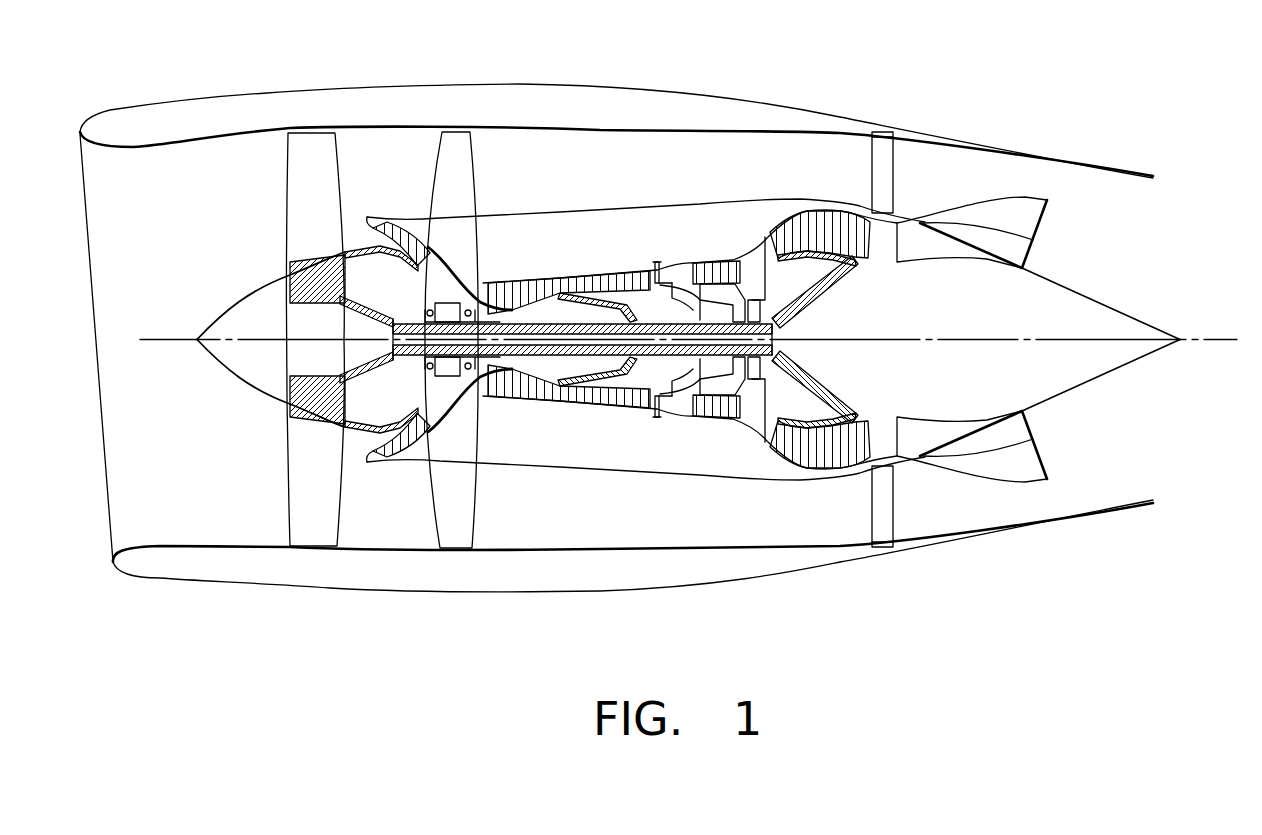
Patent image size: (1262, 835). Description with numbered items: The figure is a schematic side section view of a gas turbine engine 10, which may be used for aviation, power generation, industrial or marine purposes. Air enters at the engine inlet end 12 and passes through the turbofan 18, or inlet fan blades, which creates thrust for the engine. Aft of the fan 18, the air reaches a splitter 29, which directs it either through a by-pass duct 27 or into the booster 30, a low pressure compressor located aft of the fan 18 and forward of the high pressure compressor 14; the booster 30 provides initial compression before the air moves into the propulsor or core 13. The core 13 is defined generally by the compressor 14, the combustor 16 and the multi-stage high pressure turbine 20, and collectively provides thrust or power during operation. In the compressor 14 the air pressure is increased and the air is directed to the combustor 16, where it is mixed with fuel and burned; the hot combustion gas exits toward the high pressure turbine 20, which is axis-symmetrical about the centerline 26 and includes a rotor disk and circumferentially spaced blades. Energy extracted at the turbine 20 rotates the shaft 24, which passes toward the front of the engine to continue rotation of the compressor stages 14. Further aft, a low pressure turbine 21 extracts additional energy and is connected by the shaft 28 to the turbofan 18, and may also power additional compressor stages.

The gas turbine engine 10 is at (912, 68).
The engine inlet end 12 is at (100, 180).
The propulsor or core 13 is at (638, 176).
The compressor 14 is at (520, 272).
The combustor 16 is at (677, 260).
The turbofan 18 is at (262, 212).
The high pressure turbine 20 is at (727, 253).
The low pressure turbine 21 is at (840, 410).
The shaft 24 is at (657, 398).
The centerline 26 is at (1237, 337).
The by-pass duct 27 is at (480, 172).
The shaft 28 is at (572, 358).
The splitter 29 is at (372, 220).
The booster 30 is at (368, 452).